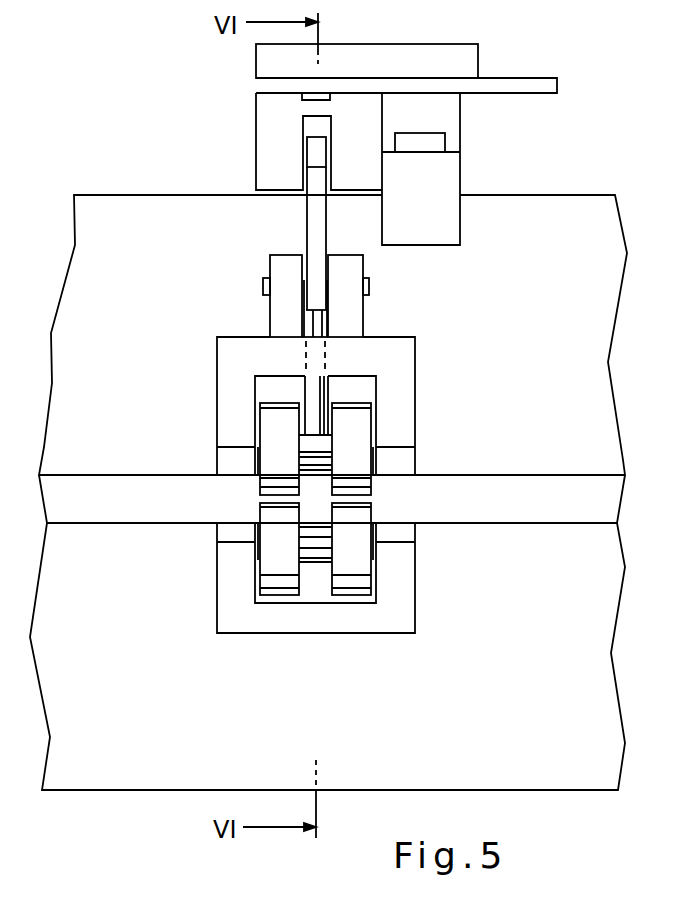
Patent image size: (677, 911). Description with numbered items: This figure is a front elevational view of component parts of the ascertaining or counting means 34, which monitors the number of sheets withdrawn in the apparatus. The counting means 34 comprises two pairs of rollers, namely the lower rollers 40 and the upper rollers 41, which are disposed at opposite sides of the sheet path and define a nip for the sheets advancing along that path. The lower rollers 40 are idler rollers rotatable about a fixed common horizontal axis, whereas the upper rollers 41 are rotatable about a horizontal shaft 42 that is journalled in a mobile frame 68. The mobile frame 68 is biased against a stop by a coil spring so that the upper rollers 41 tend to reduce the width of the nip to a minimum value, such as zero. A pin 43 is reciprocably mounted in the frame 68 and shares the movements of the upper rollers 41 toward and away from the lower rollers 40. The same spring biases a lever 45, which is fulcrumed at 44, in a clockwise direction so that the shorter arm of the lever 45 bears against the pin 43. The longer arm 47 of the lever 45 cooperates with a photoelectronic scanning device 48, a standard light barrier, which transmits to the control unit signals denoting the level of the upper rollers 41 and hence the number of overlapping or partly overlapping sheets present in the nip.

The ascertaining or counting means 34 is at (458, 308).
The mobile frame 68 is at (405, 355).
The fulcrum of the lever 44 is at (262, 288).
The photoelectronic scanning device 48 is at (435, 181).
The longer arm of the lever 47 is at (313, 152).
The lever 45 is at (313, 231).
The pin 43 is at (318, 398).
The horizontal shaft 42 is at (305, 445).
The upper rollers 41 is at (360, 435).
The lower rollers 40 is at (354, 581).